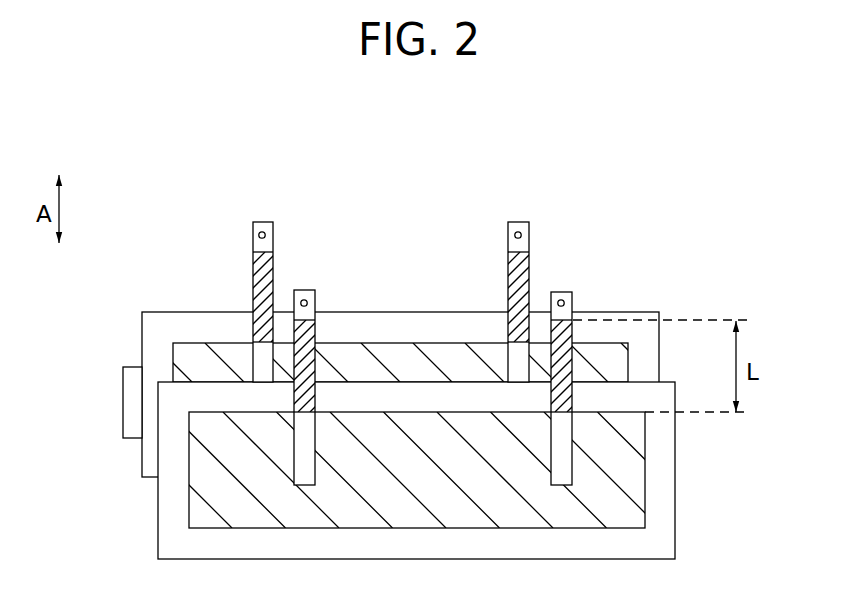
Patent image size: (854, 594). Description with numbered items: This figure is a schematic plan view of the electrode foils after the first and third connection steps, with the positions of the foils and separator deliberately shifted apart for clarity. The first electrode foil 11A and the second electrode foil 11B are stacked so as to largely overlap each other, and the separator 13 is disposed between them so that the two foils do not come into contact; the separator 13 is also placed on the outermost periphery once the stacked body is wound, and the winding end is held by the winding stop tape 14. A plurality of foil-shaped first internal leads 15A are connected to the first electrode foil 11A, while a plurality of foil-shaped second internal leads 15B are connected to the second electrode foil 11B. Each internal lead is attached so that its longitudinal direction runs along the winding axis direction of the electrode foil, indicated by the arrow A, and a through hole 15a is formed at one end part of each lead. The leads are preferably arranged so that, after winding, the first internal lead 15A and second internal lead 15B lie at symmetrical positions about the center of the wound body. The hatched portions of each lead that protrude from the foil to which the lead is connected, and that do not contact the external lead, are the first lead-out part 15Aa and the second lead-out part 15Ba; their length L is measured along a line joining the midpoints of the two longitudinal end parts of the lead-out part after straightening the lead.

The first electrode foil 11A is at (615, 357).
The second electrode foil 11B is at (630, 487).
The separator 13 is at (155, 397).
The winding stop tape 14 is at (130, 402).
The first internal lead 15A is at (302, 290).
The first lead-out part 15Aa is at (298, 333).
The second internal lead 15B is at (558, 292).
The second lead-out part 15Ba is at (556, 368).
The through hole 15a is at (256, 235).